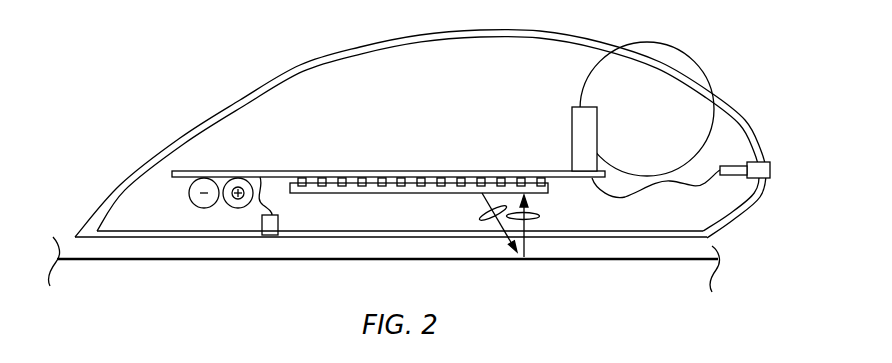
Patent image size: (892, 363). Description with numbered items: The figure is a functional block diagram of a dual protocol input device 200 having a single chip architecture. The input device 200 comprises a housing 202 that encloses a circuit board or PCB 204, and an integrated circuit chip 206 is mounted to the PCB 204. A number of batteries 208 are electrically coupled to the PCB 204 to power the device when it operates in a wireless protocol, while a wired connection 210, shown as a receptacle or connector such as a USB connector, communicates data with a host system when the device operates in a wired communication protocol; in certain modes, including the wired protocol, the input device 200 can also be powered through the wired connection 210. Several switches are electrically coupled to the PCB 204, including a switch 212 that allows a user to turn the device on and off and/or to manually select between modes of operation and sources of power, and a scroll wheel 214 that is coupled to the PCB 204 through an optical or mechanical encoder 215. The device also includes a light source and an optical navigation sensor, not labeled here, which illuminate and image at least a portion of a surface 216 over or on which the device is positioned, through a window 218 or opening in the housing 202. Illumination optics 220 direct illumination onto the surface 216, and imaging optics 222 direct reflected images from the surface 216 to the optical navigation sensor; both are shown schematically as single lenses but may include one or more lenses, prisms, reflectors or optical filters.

The dual protocol input device 200 is at (486, 85).
The housing 202 is at (179, 137).
The circuit board or PCB 204 is at (287, 170).
The integrated circuit (IC) chip 206 is at (363, 193).
The batteries 208 is at (178, 199).
The wired connection 210 is at (785, 163).
The switch 212 is at (272, 235).
The scroll wheel 214 is at (662, 113).
The optical or mechanical encoder 215 is at (572, 133).
The surface 216 is at (696, 248).
The window 218 is at (480, 235).
The illumination optics 220 is at (482, 219).
The imaging optics 222 is at (541, 216).